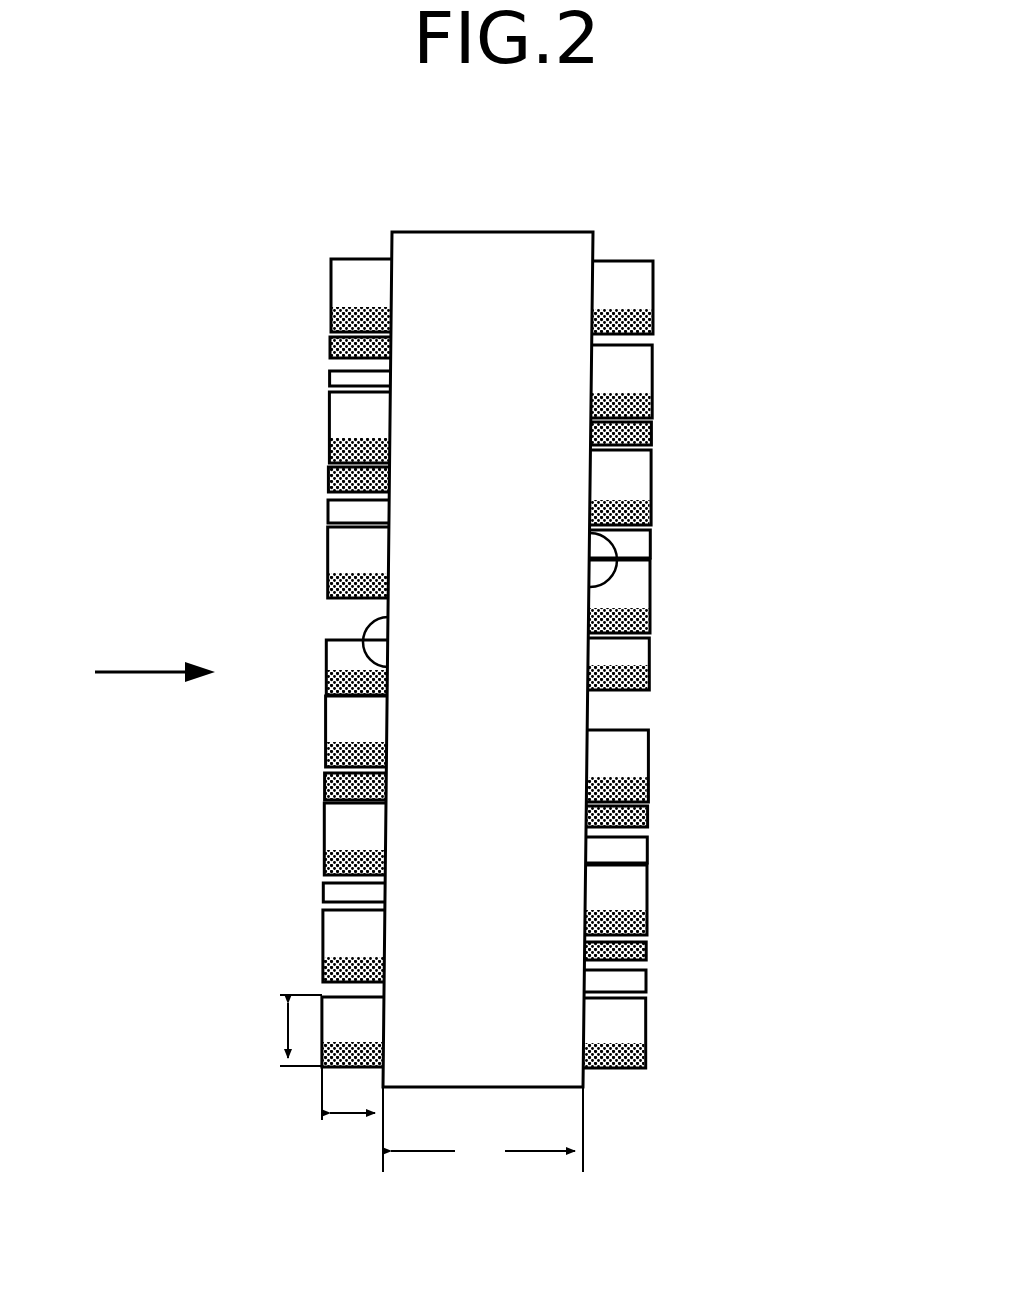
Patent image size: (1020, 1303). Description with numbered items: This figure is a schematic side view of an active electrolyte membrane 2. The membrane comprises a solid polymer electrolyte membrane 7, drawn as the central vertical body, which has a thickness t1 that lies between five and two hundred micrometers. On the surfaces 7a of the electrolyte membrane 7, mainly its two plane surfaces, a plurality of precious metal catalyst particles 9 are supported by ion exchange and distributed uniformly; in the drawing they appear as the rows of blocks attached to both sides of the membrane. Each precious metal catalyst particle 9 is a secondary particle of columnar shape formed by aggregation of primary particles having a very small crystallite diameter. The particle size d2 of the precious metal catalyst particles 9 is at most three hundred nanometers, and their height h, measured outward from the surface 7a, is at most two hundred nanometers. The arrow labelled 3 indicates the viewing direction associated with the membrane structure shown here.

The active electrolyte membrane 2 is at (385, 237).
The direction of view 3 is at (127, 668).
The solid polymer electrolyte membrane 7 is at (540, 258).
The surfaces 7a is at (590, 533).
The precious metal catalyst particles 9 is at (640, 294).
The particle size d2 is at (288, 1028).
The height h is at (348, 1120).
The thickness t1 is at (487, 1132).